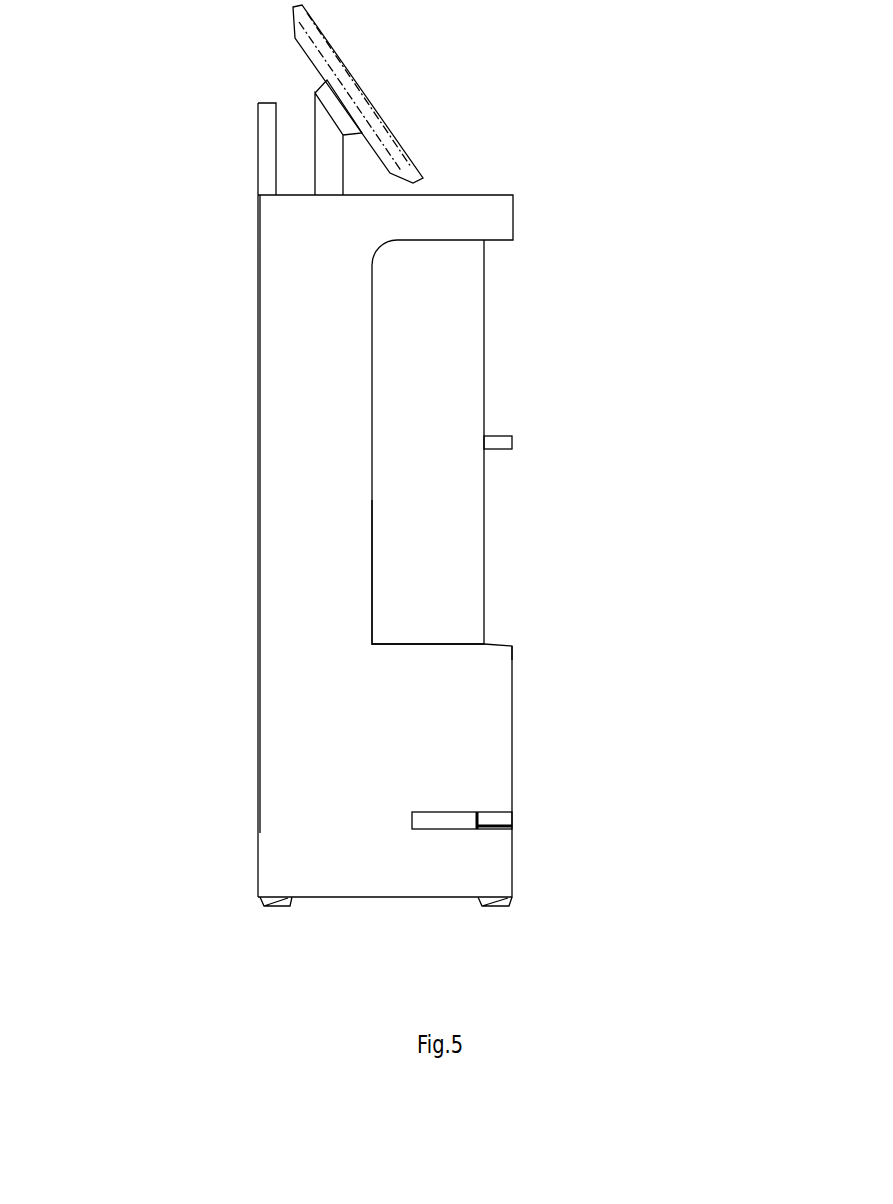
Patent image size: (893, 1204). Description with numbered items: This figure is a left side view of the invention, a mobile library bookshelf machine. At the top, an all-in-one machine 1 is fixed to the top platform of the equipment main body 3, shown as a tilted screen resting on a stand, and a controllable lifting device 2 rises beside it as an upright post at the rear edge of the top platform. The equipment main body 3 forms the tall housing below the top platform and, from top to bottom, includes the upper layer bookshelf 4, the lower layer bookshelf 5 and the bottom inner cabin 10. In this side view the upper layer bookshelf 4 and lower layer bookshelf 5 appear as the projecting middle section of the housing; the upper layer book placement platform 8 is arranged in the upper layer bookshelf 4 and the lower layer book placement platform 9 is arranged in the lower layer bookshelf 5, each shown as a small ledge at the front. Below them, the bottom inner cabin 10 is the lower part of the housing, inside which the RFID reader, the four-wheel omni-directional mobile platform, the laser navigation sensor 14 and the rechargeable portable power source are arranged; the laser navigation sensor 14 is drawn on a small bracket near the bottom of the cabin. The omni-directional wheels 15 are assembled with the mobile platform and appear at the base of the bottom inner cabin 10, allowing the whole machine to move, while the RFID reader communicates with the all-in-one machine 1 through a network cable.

The all-in-one machine 1 is at (348, 102).
The controllable lifting device 2 is at (266, 145).
The equipment main body 3 is at (297, 259).
The upper layer bookshelf 4 is at (436, 335).
The lower layer bookshelf 5 is at (438, 551).
The upper layer book placement platform 8 is at (500, 442).
The lower layer book placement platform 9 is at (499, 653).
The bottom inner cabin 10 is at (369, 750).
The laser navigation sensor 14 is at (495, 817).
The omni-directional wheels 15 is at (276, 909).